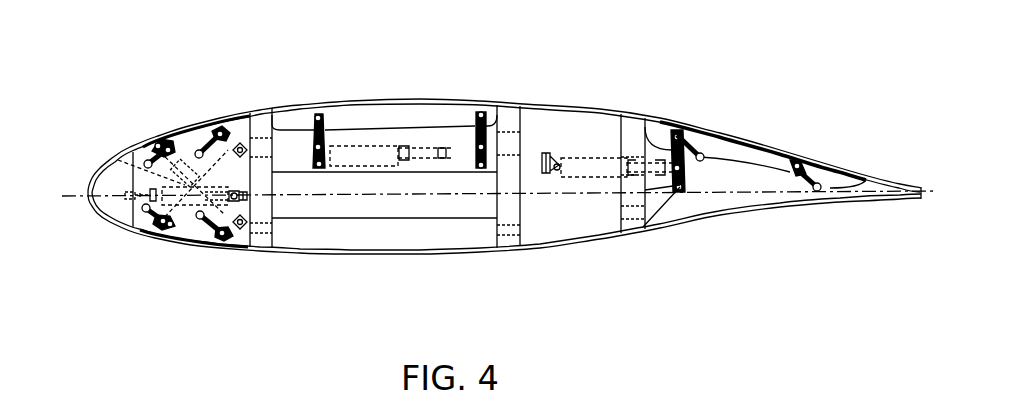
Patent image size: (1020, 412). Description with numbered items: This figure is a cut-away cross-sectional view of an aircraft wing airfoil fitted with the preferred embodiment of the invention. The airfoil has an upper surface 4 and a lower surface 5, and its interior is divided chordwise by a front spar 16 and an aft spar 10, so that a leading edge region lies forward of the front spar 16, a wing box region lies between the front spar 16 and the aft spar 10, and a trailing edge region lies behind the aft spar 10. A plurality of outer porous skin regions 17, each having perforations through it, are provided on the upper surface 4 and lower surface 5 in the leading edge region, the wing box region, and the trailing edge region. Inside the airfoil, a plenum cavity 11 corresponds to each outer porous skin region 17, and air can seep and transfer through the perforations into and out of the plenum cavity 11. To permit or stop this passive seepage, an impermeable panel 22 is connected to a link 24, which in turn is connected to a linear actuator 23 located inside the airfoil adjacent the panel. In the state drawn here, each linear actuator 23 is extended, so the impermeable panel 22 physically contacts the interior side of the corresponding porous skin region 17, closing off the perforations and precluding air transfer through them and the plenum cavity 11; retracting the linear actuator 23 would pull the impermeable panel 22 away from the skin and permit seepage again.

The upper surface 4 is at (540, 100).
The lower surface 5 is at (567, 247).
The aft spar 10 is at (637, 222).
The plenum cavity 11 is at (193, 135).
The front spar 16 is at (265, 243).
The outer porous skin region 17 is at (205, 121).
The impermeable panel 22 is at (170, 138).
The linear actuator 23 is at (118, 160).
The link 24 is at (670, 128).